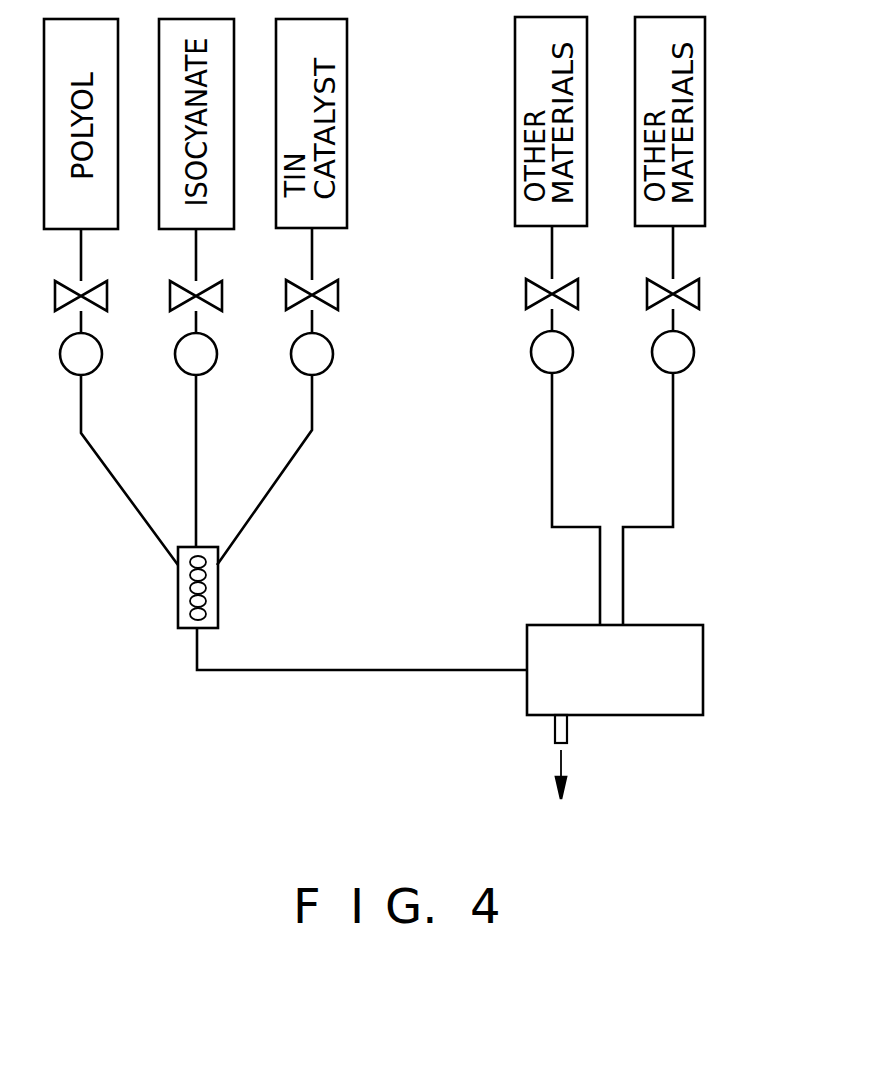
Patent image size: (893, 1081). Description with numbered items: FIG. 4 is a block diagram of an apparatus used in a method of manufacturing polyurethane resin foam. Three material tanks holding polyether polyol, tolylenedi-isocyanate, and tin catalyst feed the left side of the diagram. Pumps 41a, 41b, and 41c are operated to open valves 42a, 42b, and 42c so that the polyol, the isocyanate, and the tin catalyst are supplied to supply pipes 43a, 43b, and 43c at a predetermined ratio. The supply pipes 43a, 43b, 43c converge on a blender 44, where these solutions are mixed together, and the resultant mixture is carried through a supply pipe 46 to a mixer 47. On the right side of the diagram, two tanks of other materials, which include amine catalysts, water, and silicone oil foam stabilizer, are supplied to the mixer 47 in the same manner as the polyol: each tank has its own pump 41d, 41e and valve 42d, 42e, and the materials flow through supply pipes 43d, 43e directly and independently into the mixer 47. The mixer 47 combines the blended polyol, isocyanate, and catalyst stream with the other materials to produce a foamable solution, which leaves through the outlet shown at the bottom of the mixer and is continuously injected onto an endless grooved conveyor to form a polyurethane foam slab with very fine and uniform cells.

The pump 41a is at (64, 372).
The pump 41b is at (183, 372).
The pump 41c is at (331, 372).
The other materials pump 41d is at (537, 365).
The other materials pump 41e is at (689, 371).
The valve 42a is at (107, 291).
The valve 42b is at (222, 291).
The valve 42c is at (339, 293).
The other materials valve 42d is at (573, 301).
The other materials valve 42e is at (700, 293).
The supply pipe 43a is at (120, 495).
The supply pipe 43b is at (197, 470).
The supply pipe 43c is at (262, 505).
The other materials supply line 43d is at (552, 462).
The other materials supply line 43e is at (673, 462).
The blender 44 is at (218, 612).
The supply pipe 46 is at (393, 672).
The mixer 47 is at (662, 718).